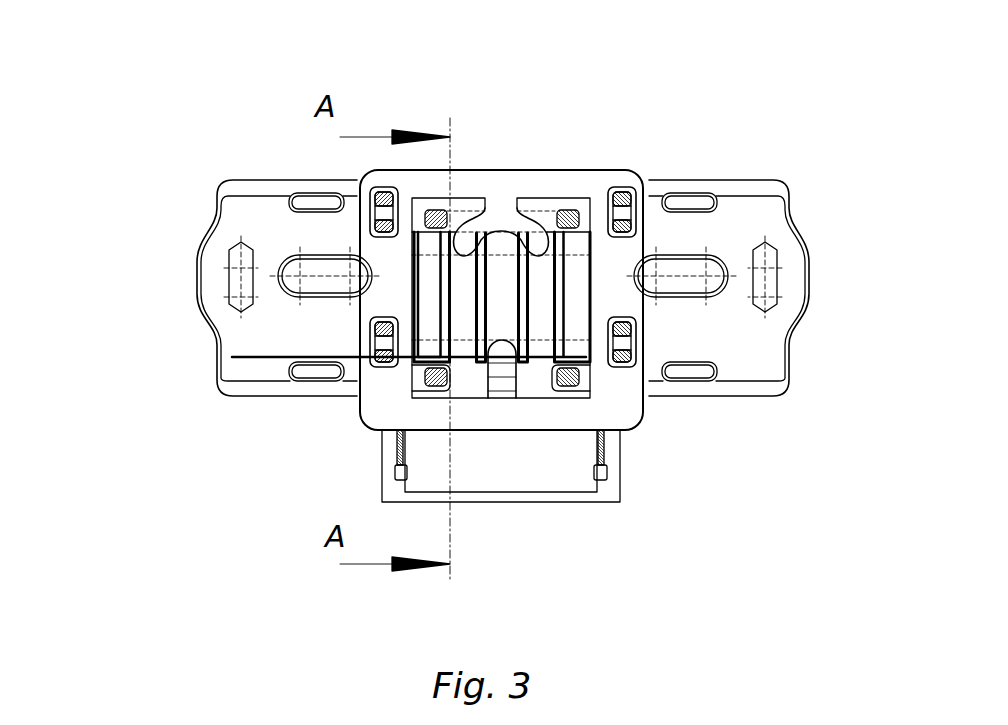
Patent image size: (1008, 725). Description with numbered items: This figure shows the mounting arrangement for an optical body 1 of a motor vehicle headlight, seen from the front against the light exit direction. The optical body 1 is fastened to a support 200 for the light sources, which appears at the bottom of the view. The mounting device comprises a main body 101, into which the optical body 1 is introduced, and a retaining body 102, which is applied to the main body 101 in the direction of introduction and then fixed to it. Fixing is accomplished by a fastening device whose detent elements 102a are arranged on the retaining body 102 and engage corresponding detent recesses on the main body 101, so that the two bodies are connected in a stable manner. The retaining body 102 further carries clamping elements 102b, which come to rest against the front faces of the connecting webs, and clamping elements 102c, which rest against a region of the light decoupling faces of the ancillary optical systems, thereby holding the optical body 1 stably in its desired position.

The optical body 1 is at (398, 374).
The main body 101 is at (758, 367).
The retaining body 102 is at (605, 180).
The detent elements 102a is at (372, 345).
The clamping elements 102b is at (436, 220).
The clamping elements 102c is at (467, 242).
The support 200 is at (512, 502).